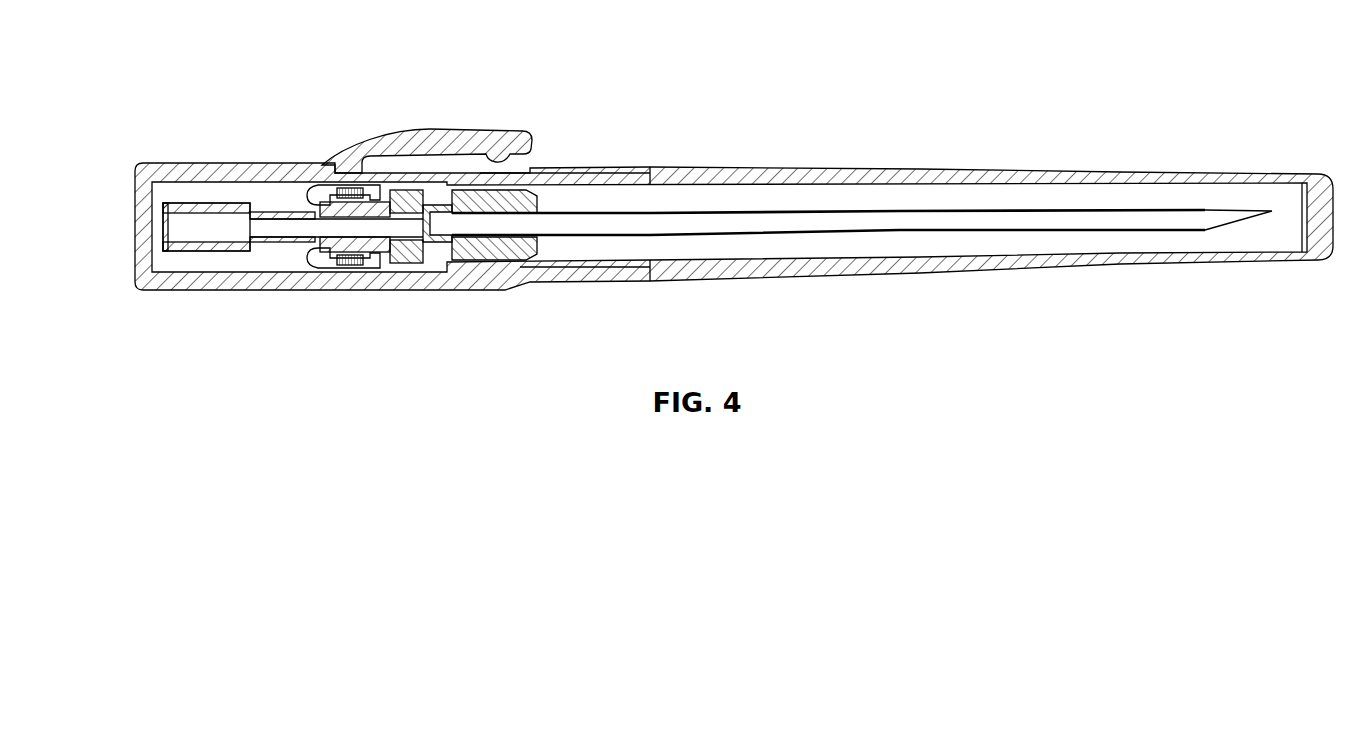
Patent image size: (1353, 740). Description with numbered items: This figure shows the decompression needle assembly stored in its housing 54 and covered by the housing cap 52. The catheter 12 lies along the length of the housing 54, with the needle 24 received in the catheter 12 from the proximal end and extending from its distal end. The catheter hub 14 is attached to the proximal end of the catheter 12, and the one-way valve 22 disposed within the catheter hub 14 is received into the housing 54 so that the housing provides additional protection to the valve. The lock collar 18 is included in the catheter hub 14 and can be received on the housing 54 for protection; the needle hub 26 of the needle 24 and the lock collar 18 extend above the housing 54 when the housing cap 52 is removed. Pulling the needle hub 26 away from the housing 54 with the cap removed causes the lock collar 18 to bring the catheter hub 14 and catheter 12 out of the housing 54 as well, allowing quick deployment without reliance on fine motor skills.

The catheter 12 is at (827, 231).
The catheter hub 14 is at (498, 247).
The lock collar 18 is at (315, 258).
The one-way valve 22 is at (435, 235).
The needle 24 is at (1222, 217).
The needle hub 26 is at (190, 247).
The housing cap 52 is at (440, 138).
The housing 54 is at (728, 248).